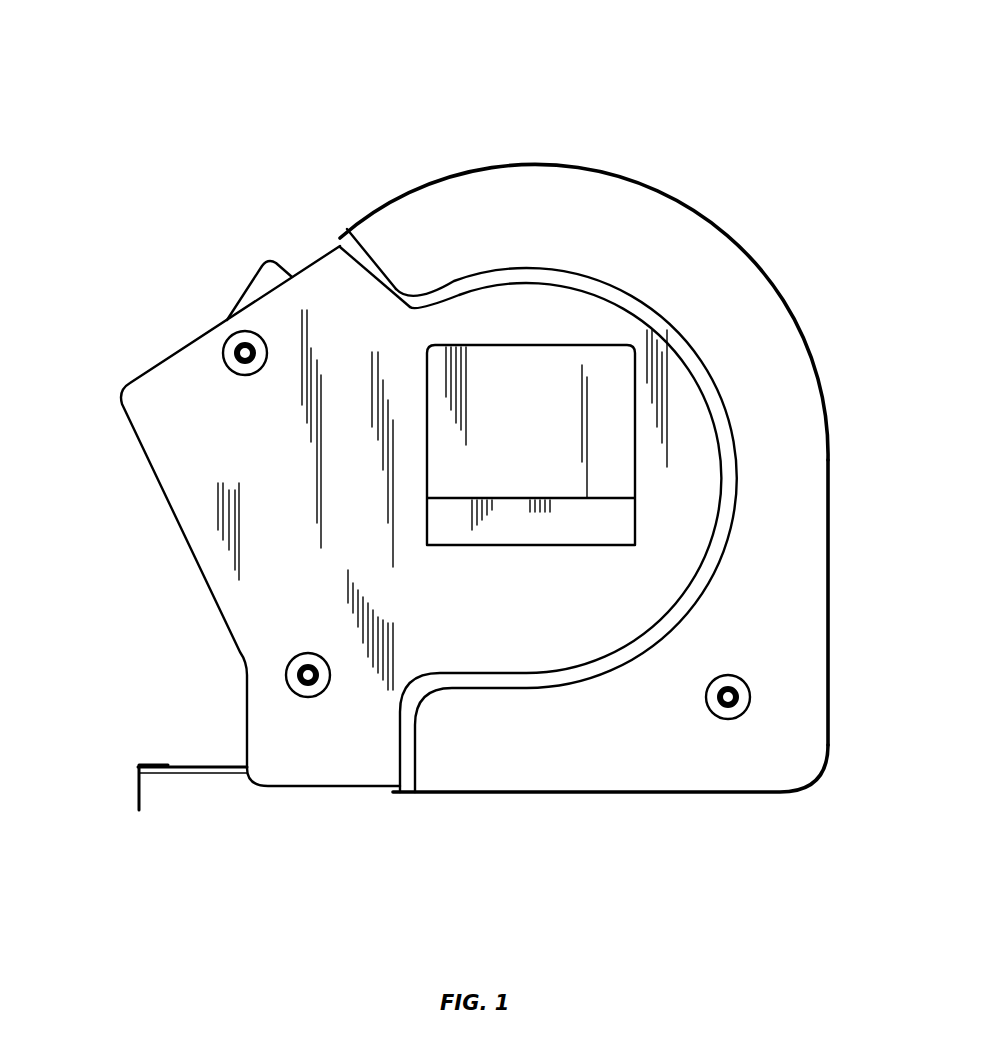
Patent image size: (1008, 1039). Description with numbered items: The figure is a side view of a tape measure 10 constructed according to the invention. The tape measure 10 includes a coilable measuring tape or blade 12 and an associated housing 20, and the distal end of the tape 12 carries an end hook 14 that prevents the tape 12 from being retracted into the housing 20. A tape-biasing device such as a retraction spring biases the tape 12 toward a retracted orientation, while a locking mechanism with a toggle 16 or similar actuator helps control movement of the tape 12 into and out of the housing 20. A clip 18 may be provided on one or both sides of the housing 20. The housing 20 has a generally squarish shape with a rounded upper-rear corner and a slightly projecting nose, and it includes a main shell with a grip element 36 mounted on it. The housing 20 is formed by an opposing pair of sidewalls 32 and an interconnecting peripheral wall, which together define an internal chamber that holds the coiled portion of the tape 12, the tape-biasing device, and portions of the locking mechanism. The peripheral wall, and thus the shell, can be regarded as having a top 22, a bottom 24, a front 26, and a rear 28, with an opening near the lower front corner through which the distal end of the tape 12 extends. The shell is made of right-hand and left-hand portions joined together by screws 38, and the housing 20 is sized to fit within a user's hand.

The tape measure 10 is at (326, 90).
The measuring tape 12 is at (200, 775).
The end hook 14 is at (138, 807).
The toggle 16 is at (263, 280).
The clip 18 is at (543, 373).
The housing 20 is at (163, 383).
The top 22 is at (320, 257).
The bottom 24 is at (327, 785).
The front 26 is at (247, 700).
The rear 28 is at (798, 472).
The sidewalls 32 is at (495, 642).
The grip element 36 is at (742, 320).
The screws 38 is at (318, 678).